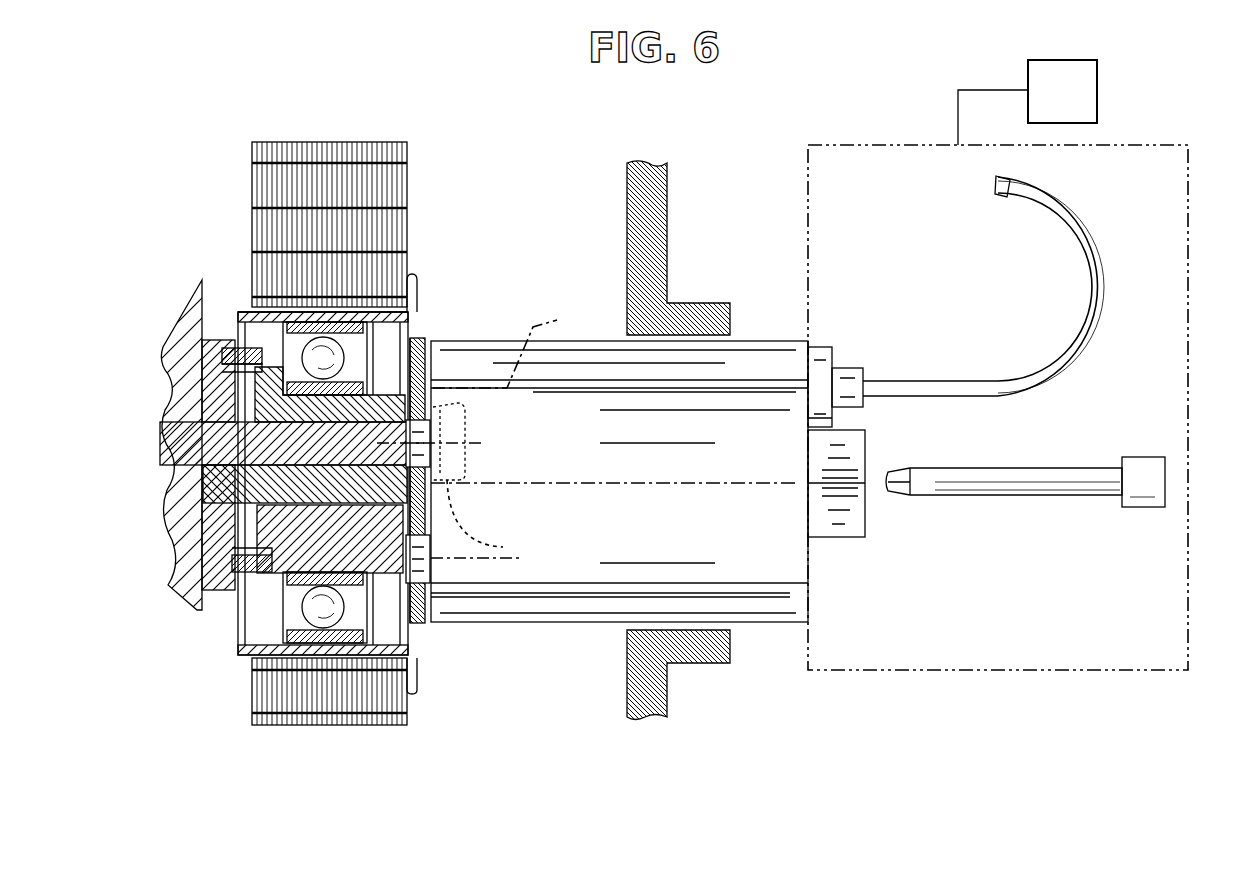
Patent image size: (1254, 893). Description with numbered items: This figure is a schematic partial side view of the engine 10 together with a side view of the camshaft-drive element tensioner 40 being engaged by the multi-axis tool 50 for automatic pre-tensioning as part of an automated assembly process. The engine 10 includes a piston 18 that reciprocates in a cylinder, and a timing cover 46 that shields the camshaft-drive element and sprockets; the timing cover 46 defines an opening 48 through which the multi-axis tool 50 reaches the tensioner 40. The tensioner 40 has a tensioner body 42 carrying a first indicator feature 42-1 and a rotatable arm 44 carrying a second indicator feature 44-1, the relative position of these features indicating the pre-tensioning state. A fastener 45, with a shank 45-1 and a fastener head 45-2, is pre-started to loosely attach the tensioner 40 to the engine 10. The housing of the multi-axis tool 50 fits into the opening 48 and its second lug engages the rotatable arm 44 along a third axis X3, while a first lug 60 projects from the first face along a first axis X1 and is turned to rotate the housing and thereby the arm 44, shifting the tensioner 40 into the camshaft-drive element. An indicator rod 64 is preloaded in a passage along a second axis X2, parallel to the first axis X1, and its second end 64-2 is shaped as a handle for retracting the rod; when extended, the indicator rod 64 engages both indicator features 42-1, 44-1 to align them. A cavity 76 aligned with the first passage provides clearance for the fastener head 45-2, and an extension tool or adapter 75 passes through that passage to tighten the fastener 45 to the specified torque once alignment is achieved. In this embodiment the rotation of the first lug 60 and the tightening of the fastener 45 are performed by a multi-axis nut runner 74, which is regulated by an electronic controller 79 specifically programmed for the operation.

The engine 10 is at (235, 188).
The piston 18 is at (388, 232).
The tensioner 40 is at (428, 685).
The tensioner body 42 is at (313, 548).
The first indicator feature 42-1 is at (433, 385).
The rotatable arm 44 is at (425, 625).
The second indicator feature 44-1 is at (443, 383).
The fastener 45 is at (383, 472).
The shank 45-1 is at (256, 505).
The fastener head 45-2 is at (450, 404).
The timing cover 46 is at (660, 237).
The opening 48 is at (748, 333).
The multi-axis tool 50 is at (763, 583).
The first lug 60 is at (837, 530).
The indicator rod 64 is at (915, 383).
The second end 64-2 is at (996, 186).
The multi-axis nut runner 74 is at (878, 143).
The extension tool or adapter 75 is at (1018, 484).
The cavity 76 is at (493, 513).
The electronic controller 79 is at (1027, 102).
The first axis X1 is at (553, 488).
The second axis X2 is at (508, 349).
The third axis X3 is at (463, 560).